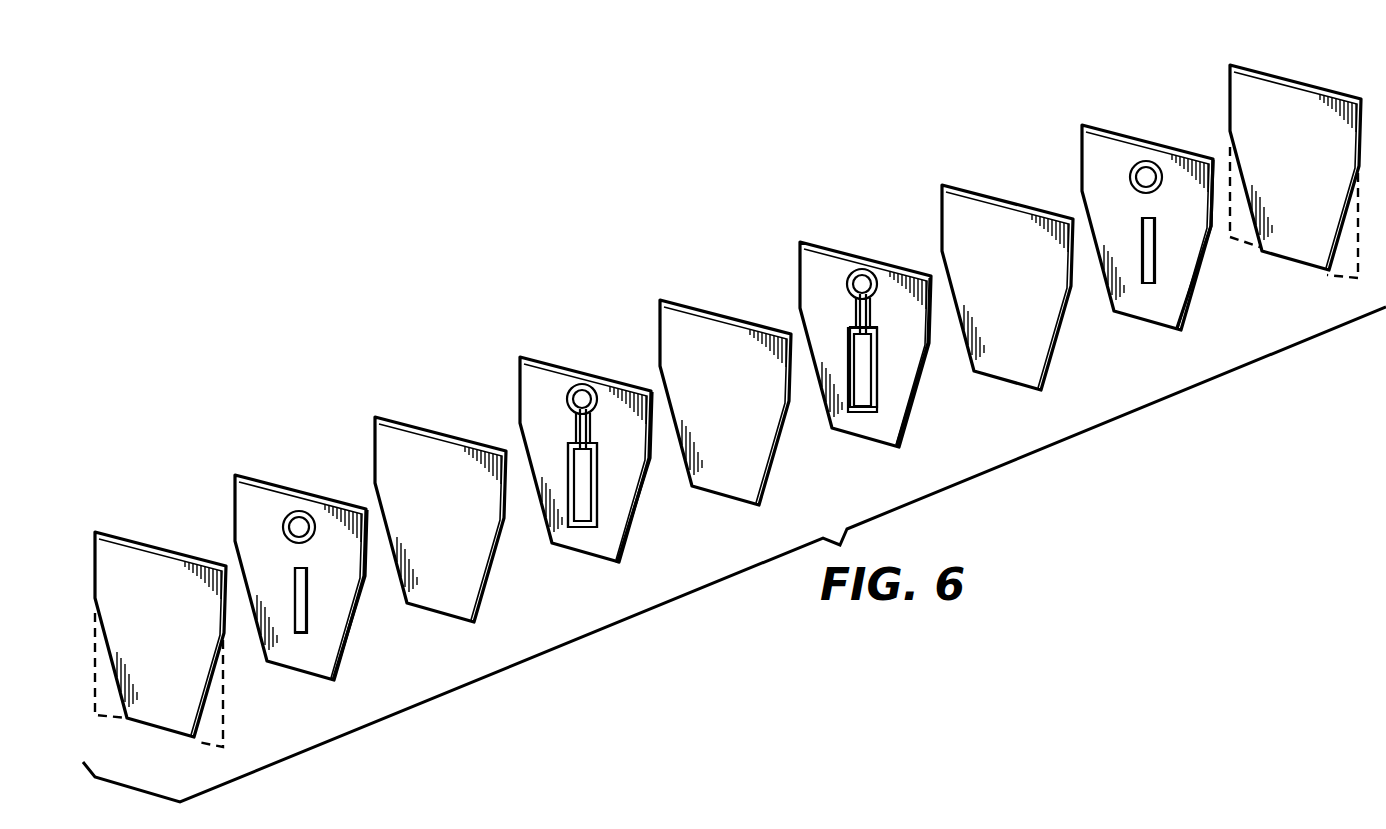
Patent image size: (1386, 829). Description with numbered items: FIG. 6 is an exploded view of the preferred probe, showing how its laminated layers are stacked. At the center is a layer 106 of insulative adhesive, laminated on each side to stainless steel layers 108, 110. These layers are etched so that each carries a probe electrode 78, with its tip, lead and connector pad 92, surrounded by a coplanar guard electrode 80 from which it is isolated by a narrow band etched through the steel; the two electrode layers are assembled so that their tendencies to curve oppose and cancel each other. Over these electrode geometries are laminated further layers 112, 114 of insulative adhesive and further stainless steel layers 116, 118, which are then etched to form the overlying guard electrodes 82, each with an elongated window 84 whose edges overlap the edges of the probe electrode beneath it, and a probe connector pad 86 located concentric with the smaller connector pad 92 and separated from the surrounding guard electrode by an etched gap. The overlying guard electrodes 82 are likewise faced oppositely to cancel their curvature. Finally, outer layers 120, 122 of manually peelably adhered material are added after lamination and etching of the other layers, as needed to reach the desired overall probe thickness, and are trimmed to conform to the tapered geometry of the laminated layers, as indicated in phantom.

The probe electrode 78 is at (587, 515).
The coplanar guard electrode 80 is at (620, 497).
The overlying guard electrode 82 is at (333, 620).
The window 84 is at (310, 628).
The probe connector pad 86 is at (299, 508).
The connector pad 92 is at (583, 390).
The central layer of insulative adhesive 106 is at (680, 298).
The stainless steel layer 108 is at (537, 357).
The stainless steel layer 110 is at (815, 242).
The layer of insulative adhesive 112 is at (400, 418).
The layer of insulative adhesive 114 is at (962, 185).
The stainless steel layer 116 is at (250, 470).
The stainless steel layer 118 is at (1098, 122).
The outer layer of manually peelably adhered material 120 is at (115, 532).
The outer layer of manually peelably adhered material 122 is at (1297, 83).